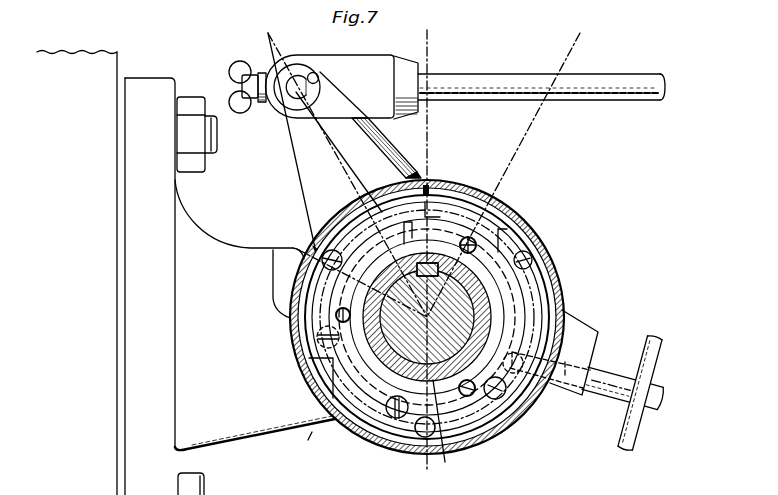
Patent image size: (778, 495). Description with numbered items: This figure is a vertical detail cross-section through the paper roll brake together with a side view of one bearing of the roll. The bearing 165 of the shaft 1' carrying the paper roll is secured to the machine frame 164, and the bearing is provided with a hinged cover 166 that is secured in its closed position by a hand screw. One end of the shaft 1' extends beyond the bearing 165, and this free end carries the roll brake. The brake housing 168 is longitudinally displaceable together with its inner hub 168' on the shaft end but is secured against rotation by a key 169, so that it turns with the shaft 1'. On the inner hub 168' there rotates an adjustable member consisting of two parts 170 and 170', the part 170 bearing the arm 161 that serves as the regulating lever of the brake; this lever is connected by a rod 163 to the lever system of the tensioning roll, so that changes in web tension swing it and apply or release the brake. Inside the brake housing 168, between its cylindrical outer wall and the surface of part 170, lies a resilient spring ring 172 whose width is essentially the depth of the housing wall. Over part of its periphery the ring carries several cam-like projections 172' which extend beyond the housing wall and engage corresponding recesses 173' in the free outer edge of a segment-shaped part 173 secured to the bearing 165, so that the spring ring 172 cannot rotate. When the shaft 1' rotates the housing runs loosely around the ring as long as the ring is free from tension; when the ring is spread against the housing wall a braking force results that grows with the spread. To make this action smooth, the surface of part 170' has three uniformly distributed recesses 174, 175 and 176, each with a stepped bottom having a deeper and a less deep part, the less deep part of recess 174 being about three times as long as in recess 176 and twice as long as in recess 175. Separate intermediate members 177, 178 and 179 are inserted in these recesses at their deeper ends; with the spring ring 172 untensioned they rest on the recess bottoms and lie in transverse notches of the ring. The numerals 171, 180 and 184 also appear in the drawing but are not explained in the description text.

The machine frame 164 is at (118, 58).
The eye bolt 184 is at (240, 70).
The rod 163 is at (519, 81).
The regulating lever 161 is at (300, 163).
The recess 176 is at (382, 212).
The locking tab 171 is at (455, 225).
The hub 180 is at (470, 237).
The spring ring 172 is at (496, 218).
The adjustment member part 170' is at (527, 206).
The shaft 1' is at (427, 317).
The intermediate member 178 is at (530, 258).
The recess 175 is at (530, 295).
The hinged cover 166 is at (590, 332).
The key 169 is at (657, 388).
The bearing 165 is at (204, 243).
The intermediate member 179 is at (313, 240).
The recess 174 is at (368, 403).
The intermediate member 177 is at (423, 438).
The inner hub 168' is at (444, 429).
The brake housing 168 is at (427, 335).
The adjustment member part 170 is at (479, 423).
The segment-shaped part 173 is at (499, 429).
The cam-like projection 172' is at (550, 394).
The recess 173' is at (537, 399).